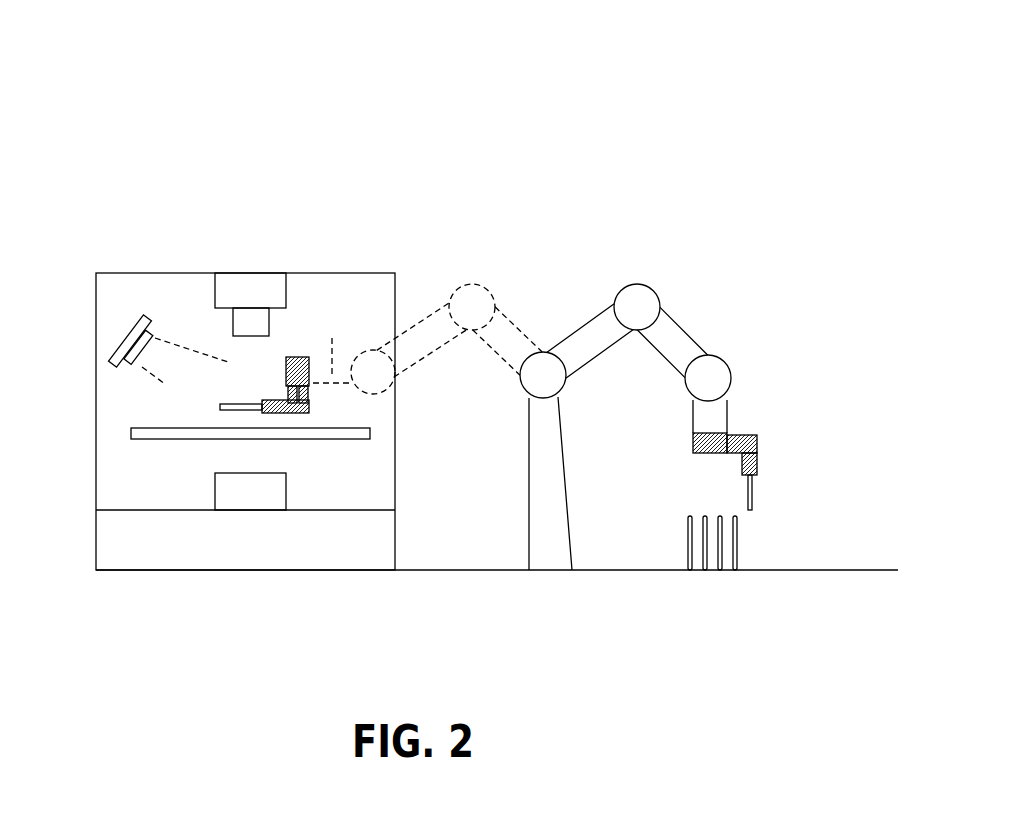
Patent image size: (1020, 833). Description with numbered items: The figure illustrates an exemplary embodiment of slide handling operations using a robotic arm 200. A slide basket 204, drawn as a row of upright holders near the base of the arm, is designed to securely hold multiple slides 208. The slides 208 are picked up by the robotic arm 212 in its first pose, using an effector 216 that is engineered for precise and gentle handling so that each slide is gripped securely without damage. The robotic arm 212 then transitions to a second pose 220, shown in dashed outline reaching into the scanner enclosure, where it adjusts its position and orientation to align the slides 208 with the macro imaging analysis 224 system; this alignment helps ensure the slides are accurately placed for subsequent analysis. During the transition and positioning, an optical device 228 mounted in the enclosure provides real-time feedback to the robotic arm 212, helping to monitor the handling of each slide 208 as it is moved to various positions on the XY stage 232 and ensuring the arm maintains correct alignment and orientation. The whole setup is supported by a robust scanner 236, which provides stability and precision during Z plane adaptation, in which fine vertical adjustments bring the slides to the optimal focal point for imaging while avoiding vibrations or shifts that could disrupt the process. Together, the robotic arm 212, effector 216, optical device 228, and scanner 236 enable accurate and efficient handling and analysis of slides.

The slide handling operations using a robotic arm 200 is at (218, 82).
The slide basket 204 is at (740, 547).
The slides 208 is at (752, 485).
The robotic arm 212 is at (651, 285).
The effector 216 is at (757, 437).
The second pose 220 is at (469, 284).
The macro imaging analysis system 224 is at (128, 342).
The optical device 228 is at (215, 287).
The XY stage 232 is at (131, 432).
The scanner 236 is at (118, 548).